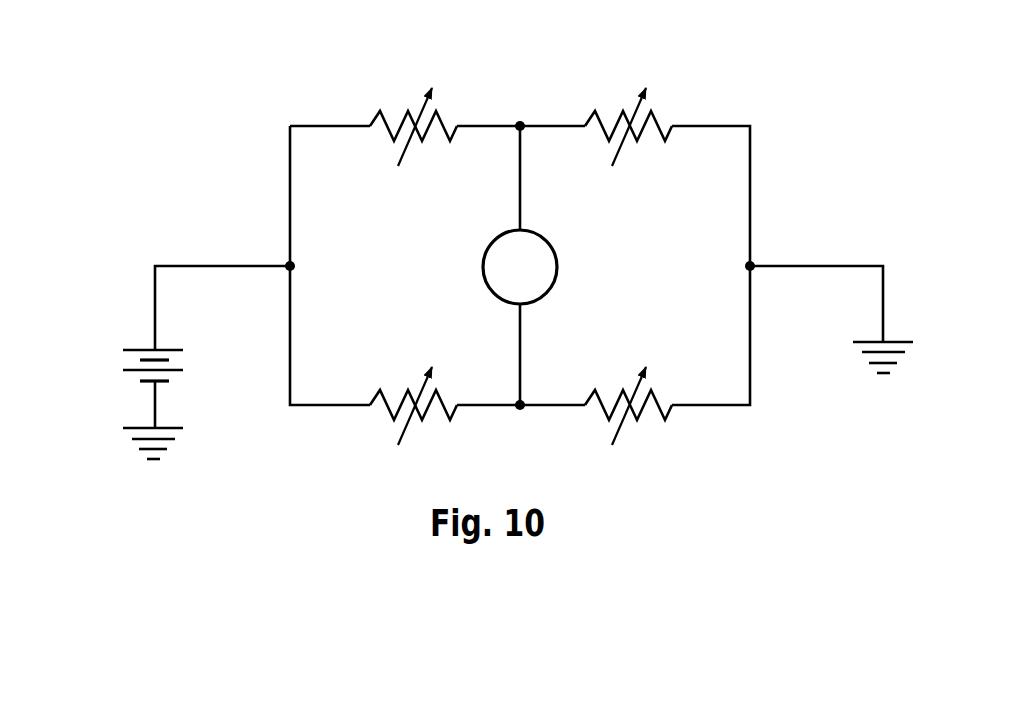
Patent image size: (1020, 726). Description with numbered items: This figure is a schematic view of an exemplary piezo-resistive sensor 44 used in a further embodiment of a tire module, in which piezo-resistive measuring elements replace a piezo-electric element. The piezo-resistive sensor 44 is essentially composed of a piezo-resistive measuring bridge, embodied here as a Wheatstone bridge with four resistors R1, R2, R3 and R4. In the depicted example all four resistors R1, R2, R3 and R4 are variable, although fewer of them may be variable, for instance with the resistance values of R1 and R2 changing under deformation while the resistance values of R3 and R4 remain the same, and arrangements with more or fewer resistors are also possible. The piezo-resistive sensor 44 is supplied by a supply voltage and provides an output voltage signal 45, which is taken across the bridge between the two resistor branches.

The piezo-resistive sensor 44 is at (475, 244).
The output voltage signal 45 is at (542, 267).
The piezo-resistive measuring element R1 is at (413, 133).
The piezo-resistive measuring element R2 is at (628, 133).
The piezo-resistive measuring element R3 is at (413, 412).
The piezo-resistive measuring element R4 is at (628, 412).